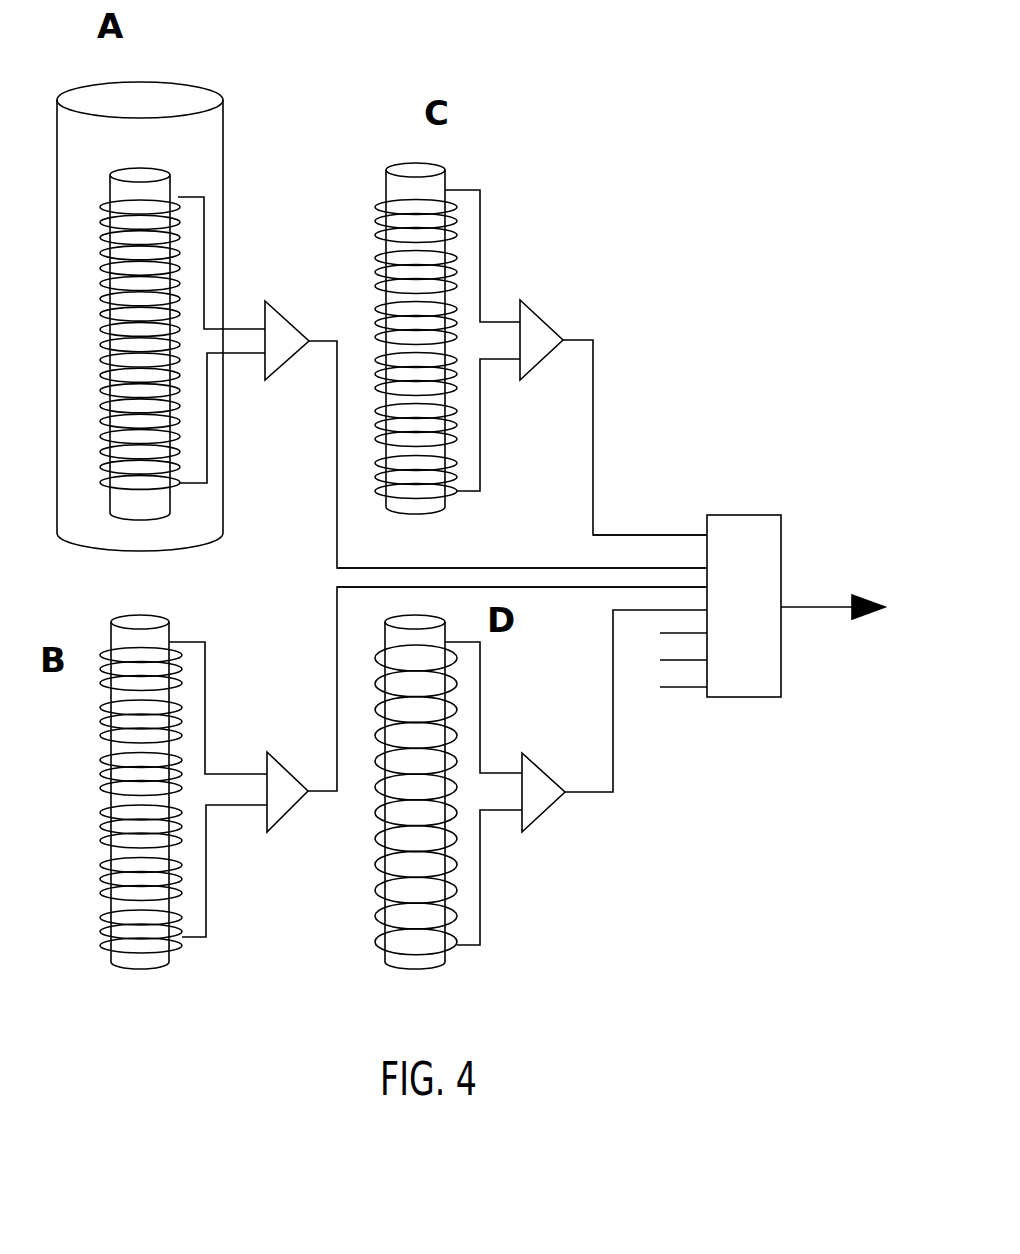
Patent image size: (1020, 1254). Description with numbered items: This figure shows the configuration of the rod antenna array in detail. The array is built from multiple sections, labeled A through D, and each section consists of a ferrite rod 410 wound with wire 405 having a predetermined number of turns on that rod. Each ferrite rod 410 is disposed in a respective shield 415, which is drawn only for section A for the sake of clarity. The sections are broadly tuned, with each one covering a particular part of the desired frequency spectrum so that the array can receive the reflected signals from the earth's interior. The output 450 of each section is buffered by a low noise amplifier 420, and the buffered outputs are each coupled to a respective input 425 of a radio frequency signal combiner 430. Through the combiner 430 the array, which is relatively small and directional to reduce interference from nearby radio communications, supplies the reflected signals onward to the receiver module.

The wire 405 is at (334, 563).
The ferrite rod 410 is at (283, 549).
The shield 415 is at (174, 302).
The low noise amplifier 420 is at (472, 589).
The input 425 is at (697, 585).
The radio frequency signal combiner 430 is at (774, 597).
The output 450 is at (362, 567).